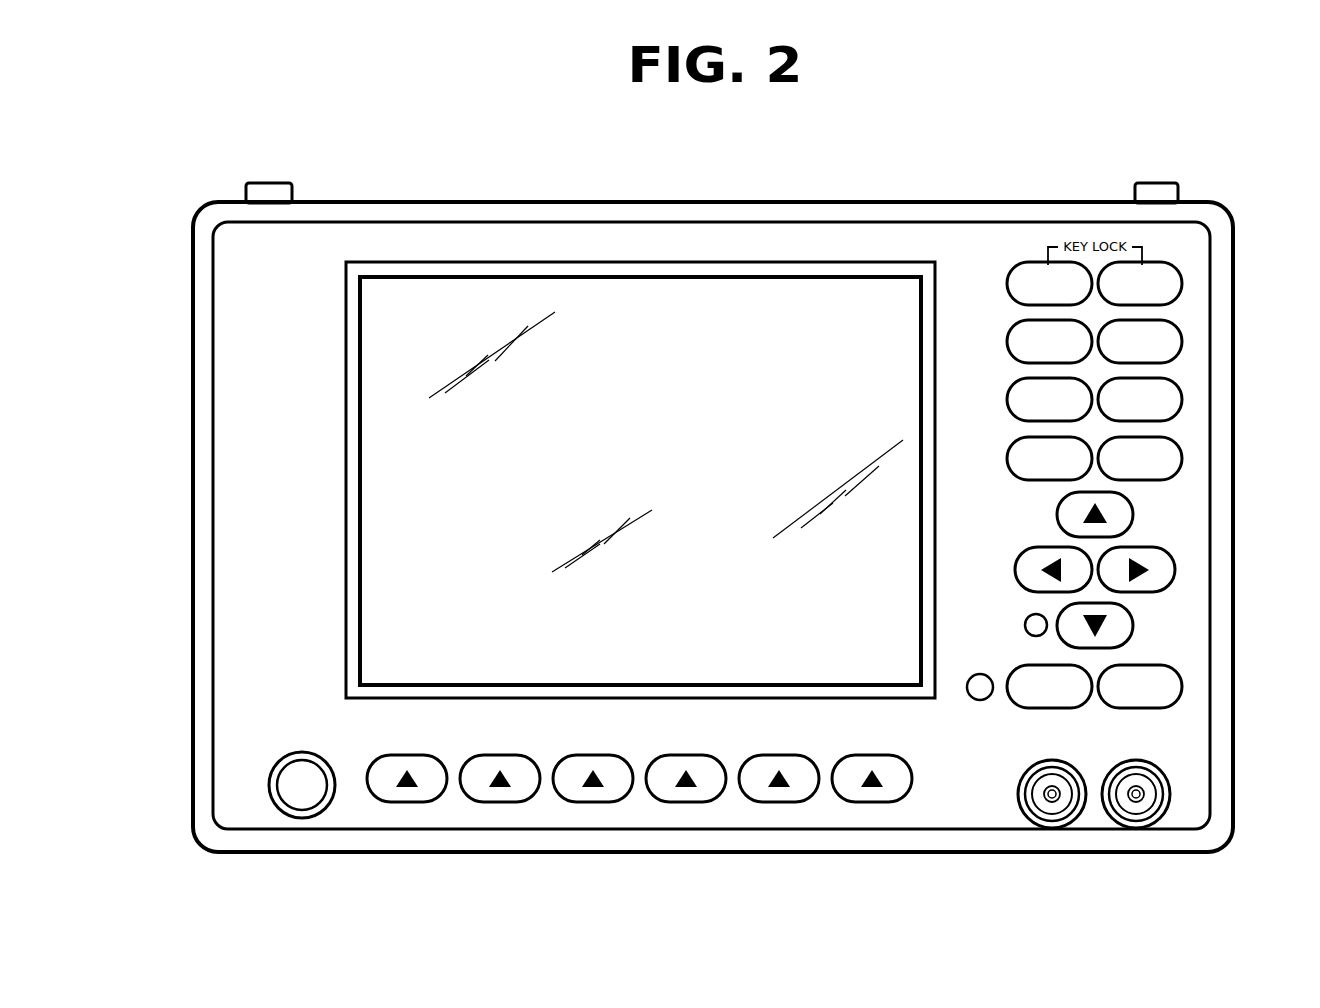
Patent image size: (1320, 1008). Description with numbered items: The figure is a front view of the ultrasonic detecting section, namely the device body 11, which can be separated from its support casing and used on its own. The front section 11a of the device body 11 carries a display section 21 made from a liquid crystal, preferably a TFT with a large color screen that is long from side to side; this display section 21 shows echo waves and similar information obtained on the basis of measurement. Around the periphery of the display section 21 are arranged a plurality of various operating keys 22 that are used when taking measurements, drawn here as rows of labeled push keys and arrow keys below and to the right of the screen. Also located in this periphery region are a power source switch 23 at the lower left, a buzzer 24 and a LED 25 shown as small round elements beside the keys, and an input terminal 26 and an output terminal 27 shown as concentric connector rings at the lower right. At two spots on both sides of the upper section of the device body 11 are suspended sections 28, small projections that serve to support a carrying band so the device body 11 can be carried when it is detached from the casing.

The device body 11 is at (875, 191).
The front section 11a is at (460, 244).
The display section 21 is at (610, 292).
The operating keys 22 is at (1010, 322).
The power source switch 23 is at (302, 797).
The buzzer 24 is at (1025, 621).
The LED 25 is at (975, 700).
The input terminal 26 is at (1146, 805).
The output terminal 27 is at (1045, 805).
The suspended sections 28 is at (270, 193).